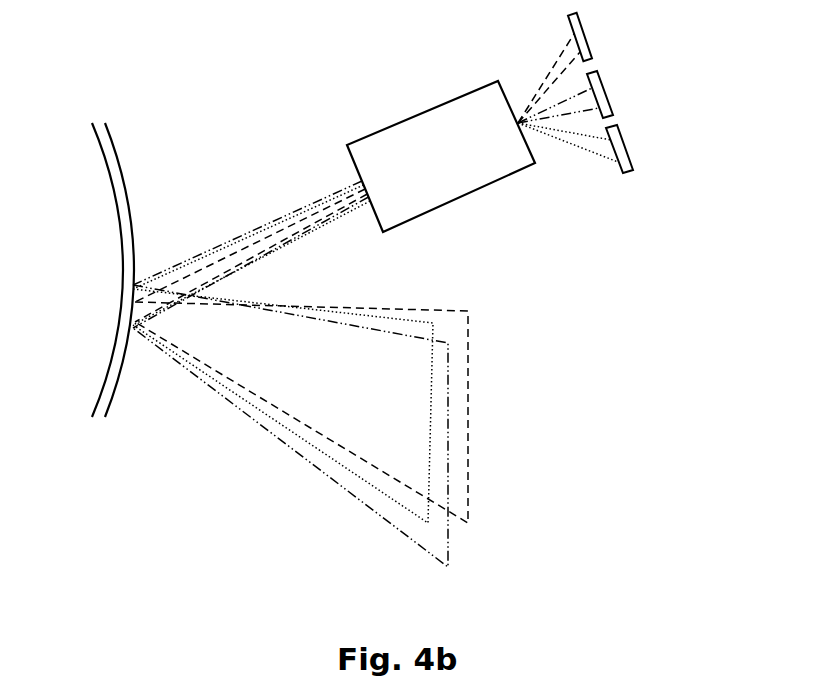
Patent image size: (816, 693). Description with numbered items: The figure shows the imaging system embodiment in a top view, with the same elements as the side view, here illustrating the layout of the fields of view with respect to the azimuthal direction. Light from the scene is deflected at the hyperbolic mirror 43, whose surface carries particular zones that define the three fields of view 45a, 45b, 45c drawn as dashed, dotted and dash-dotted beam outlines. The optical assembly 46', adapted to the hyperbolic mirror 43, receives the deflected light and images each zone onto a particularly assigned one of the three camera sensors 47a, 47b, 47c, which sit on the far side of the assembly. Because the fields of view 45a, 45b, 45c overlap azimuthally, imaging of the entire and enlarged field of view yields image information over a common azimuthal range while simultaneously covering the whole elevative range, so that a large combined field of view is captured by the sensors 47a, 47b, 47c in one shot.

The hyperbolic mirror 43 is at (83, 270).
The optical assembly 46' is at (455, 156).
The camera sensor 47a is at (628, 30).
The camera sensor 47b is at (650, 89).
The camera sensor 47c is at (670, 145).
The field of view 45a is at (353, 412).
The field of view 45b is at (346, 436).
The field of view 45c is at (290, 426).